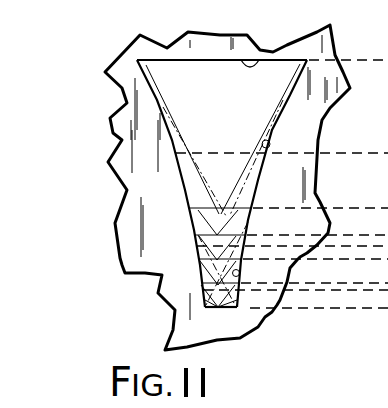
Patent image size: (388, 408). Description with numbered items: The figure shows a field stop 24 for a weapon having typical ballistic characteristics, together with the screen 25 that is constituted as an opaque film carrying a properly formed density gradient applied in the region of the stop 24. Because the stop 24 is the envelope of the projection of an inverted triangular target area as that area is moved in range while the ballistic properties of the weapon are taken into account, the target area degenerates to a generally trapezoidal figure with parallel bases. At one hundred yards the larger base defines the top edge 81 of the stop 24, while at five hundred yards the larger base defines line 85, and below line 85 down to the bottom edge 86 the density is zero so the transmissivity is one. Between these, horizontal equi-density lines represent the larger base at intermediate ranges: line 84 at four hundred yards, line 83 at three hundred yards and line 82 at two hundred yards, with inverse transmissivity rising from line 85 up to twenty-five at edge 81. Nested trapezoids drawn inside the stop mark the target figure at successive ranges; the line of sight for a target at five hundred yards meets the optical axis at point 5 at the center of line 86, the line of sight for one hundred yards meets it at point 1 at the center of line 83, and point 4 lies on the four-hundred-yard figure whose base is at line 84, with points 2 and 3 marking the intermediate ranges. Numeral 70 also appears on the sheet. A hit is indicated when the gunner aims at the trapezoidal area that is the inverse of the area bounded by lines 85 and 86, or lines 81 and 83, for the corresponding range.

The point 1 is at (212, 212).
The second layer level 2 is at (212, 234).
The third layer level 3 is at (214, 258).
The point 4 is at (214, 282).
The point 5 is at (216, 306).
The stop 24 is at (330, 62).
The screen 25 is at (270, 142).
The sheet reference 70 is at (374, 392).
The top edge 81 is at (258, 60).
The line 82 is at (200, 150).
The line 83 is at (255, 194).
The line 84 is at (250, 236).
The line 85 is at (240, 273).
The bottom edge 86 is at (237, 306).